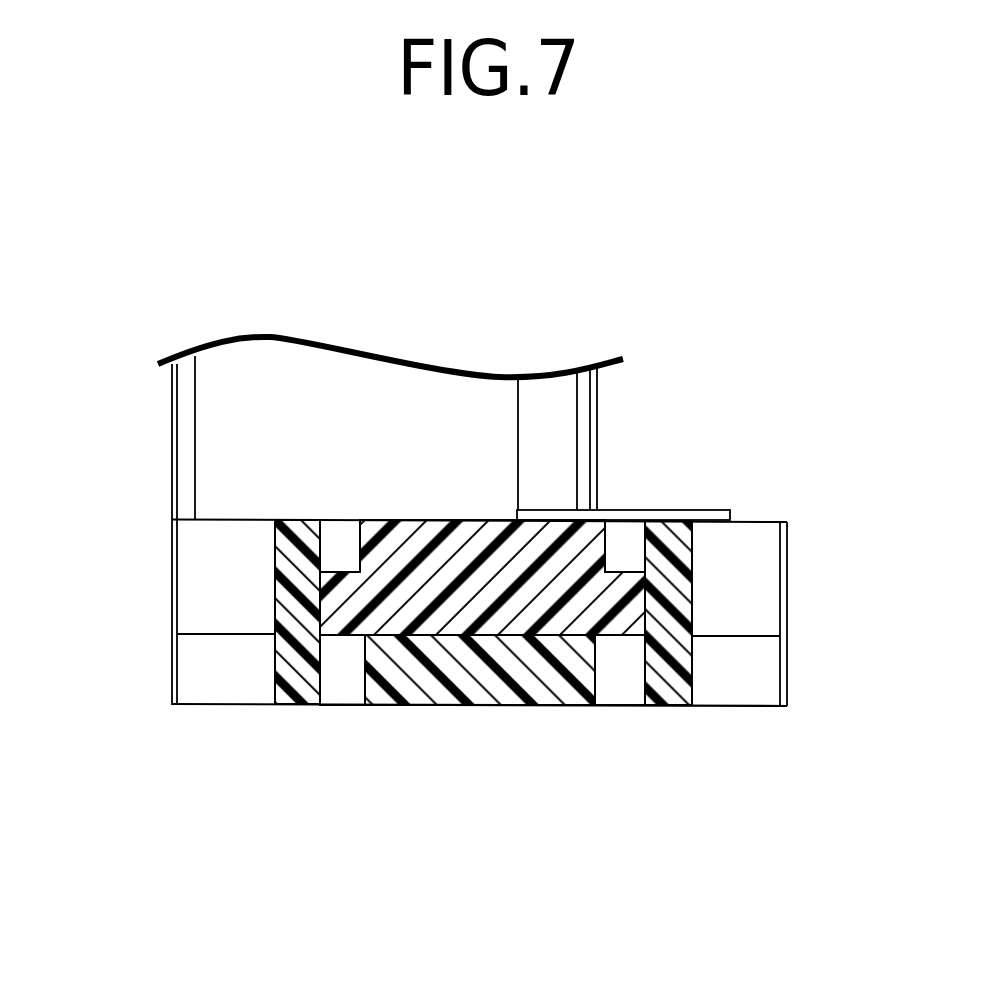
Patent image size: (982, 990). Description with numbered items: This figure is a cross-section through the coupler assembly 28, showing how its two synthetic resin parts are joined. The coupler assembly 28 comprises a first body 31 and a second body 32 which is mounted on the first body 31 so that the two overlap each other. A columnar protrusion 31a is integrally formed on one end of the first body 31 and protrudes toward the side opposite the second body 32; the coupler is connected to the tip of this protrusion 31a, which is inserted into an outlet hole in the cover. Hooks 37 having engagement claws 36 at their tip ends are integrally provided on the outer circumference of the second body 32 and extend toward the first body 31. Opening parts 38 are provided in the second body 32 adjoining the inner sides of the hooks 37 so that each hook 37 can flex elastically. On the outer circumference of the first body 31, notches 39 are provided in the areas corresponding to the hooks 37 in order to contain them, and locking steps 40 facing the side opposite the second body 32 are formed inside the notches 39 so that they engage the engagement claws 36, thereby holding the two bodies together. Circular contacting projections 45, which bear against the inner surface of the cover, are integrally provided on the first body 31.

The coupler assembly 28 is at (160, 672).
The first body 31 is at (430, 537).
The columnar protrusion 31a is at (197, 432).
The second body 32 is at (490, 698).
The engagement claw 36 is at (342, 565).
The hook 37 is at (277, 605).
The opening part 38 is at (342, 693).
The notch 39 is at (343, 568).
The locking step 40 is at (347, 565).
The contacting projection 45 is at (563, 507).